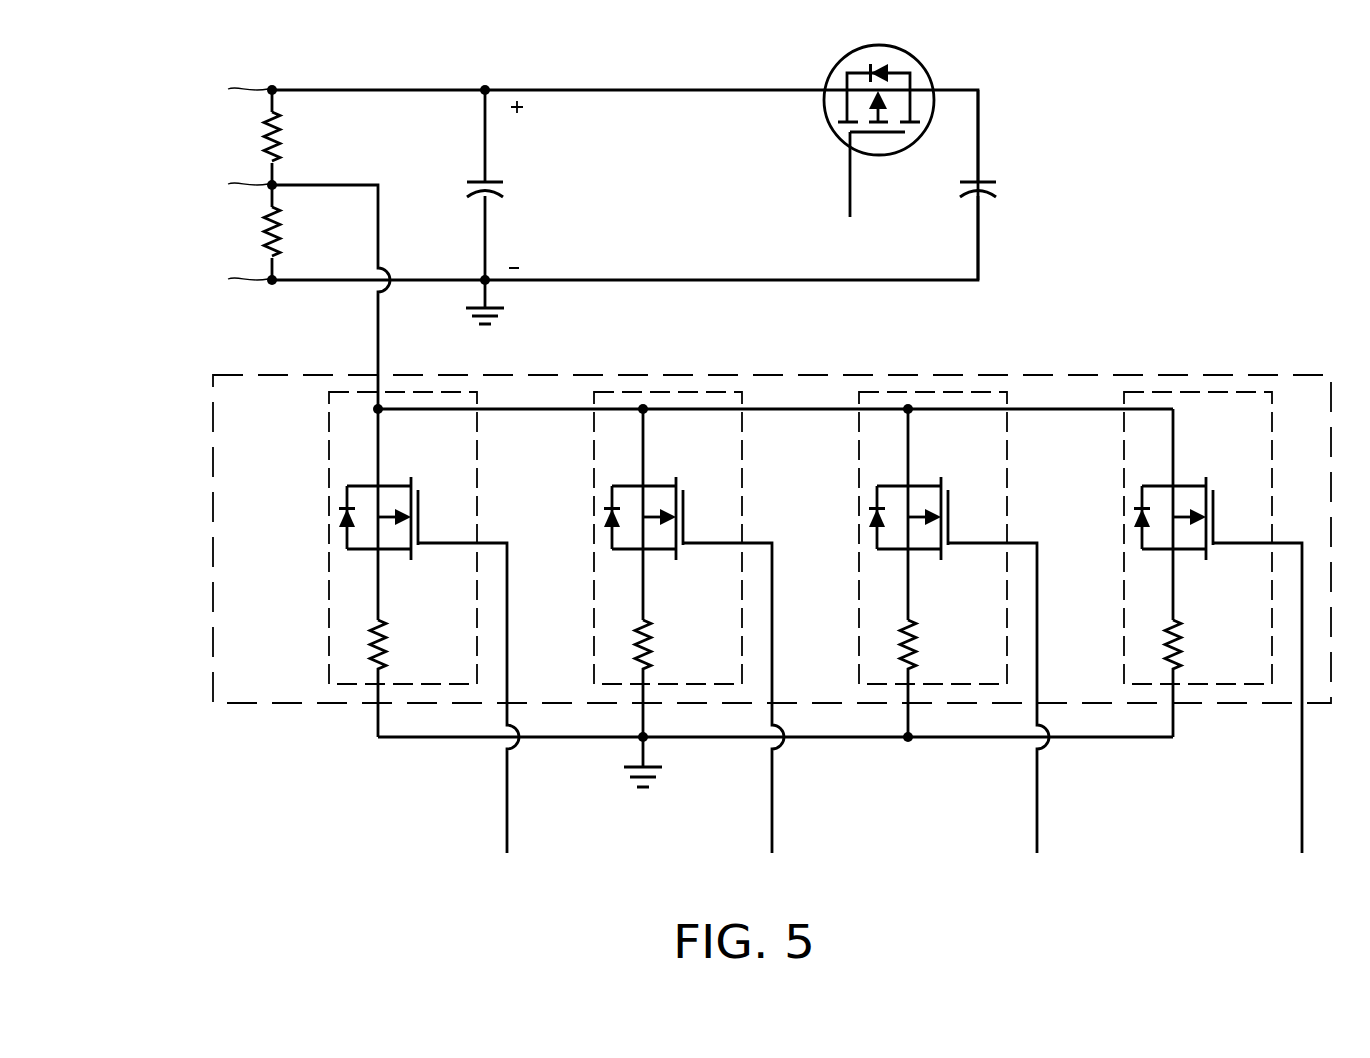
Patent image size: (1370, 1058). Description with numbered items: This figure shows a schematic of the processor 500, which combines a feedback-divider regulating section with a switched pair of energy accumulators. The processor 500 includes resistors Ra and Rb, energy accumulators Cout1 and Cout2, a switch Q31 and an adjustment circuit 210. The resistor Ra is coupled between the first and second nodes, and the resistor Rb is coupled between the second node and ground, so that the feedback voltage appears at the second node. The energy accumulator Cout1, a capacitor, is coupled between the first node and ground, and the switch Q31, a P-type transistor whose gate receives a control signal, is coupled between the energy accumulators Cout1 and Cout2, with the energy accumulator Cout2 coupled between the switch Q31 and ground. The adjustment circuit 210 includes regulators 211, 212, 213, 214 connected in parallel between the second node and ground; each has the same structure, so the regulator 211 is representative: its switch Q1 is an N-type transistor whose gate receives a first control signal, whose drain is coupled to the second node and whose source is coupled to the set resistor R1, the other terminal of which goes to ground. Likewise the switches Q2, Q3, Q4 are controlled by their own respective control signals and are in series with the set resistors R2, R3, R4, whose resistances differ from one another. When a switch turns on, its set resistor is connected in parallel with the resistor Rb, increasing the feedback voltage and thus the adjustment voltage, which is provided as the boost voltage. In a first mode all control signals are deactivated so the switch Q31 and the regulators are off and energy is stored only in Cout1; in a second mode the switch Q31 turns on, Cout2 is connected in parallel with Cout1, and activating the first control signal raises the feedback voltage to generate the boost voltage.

The processor 500 is at (1294, 114).
The adjustment circuit 210 is at (1216, 373).
The regulator 211 is at (329, 437).
The regulator 212 is at (594, 437).
The regulator 213 is at (859, 437).
The regulator 214 is at (1124, 437).
The switch Q1 is at (415, 478).
The switch Q2 is at (680, 478).
The switch Q3 is at (945, 478).
The switch Q4 is at (1210, 478).
The set resistor R1 is at (392, 648).
The set resistor R2 is at (657, 648).
The set resistor R3 is at (922, 648).
The set resistor R4 is at (1187, 648).
The resistor Ra is at (283, 127).
The resistor Rb is at (283, 239).
The energy accumulator Cout1 is at (500, 189).
The energy accumulator Cout2 is at (1000, 189).
The switch Q31 is at (830, 137).